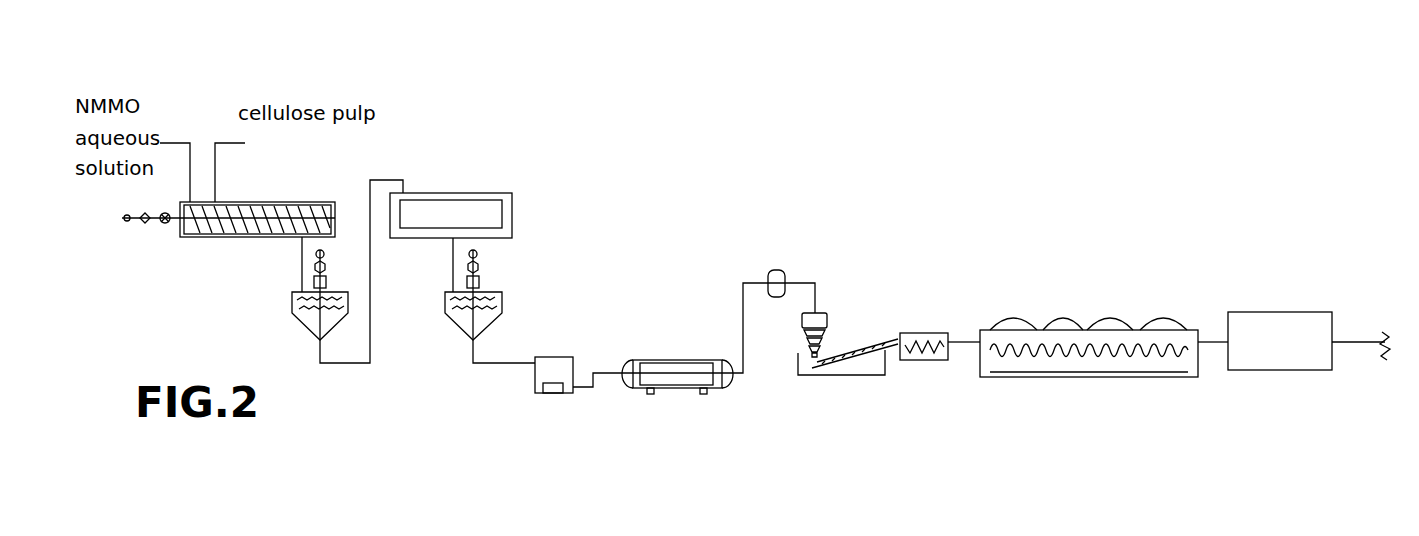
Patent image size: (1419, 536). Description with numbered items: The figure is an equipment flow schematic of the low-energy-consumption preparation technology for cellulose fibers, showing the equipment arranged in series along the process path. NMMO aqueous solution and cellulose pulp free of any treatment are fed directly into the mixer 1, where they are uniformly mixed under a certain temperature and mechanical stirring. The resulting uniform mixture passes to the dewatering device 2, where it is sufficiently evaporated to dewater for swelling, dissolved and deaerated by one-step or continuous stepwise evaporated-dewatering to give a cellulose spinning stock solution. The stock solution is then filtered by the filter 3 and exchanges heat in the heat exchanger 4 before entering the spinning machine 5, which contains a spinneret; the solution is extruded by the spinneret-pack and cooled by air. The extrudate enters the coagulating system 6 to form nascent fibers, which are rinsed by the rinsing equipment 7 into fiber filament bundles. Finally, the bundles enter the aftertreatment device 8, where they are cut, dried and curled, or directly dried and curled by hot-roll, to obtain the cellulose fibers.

The mixer 1 is at (335, 201).
The dewatering device 2 is at (512, 191).
The filter 3 is at (573, 393).
The heat exchanger 4 is at (722, 393).
The spinning machine 5 is at (827, 315).
The coagulating system 6 is at (885, 375).
The rinsing equipment 7 is at (1088, 328).
The aftertreatment device 8 is at (1280, 370).